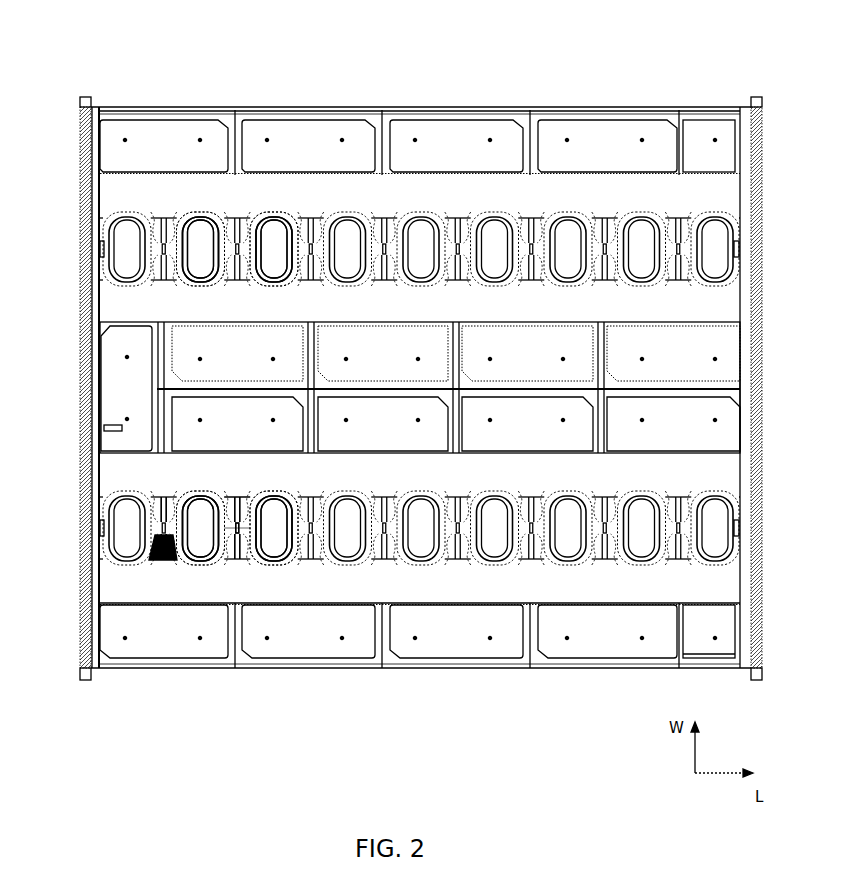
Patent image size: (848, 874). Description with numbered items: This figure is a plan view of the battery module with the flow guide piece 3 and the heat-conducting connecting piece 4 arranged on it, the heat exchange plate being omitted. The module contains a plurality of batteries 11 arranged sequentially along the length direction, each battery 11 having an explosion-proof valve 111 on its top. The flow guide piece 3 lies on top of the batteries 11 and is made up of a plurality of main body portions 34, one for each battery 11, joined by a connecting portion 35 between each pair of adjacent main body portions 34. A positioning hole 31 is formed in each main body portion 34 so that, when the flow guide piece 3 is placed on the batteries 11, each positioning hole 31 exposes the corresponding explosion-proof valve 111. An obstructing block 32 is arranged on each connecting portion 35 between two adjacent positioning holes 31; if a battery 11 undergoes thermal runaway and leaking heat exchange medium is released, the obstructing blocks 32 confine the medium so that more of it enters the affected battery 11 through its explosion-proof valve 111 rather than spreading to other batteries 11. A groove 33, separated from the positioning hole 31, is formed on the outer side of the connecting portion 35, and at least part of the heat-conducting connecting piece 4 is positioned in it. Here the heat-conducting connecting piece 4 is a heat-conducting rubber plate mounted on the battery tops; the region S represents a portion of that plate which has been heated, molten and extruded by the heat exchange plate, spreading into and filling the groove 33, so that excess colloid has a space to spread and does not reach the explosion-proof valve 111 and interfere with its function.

The flow guide piece 3 is at (101, 212).
The heat-conducting connecting piece 4 is at (95, 176).
The battery 11 is at (182, 118).
The explosion-proof valve 111 is at (204, 218).
The positioning hole 31 is at (190, 565).
The obstructing block 32 is at (242, 535).
The groove 33 is at (236, 520).
The main body portion 34 is at (178, 565).
The connecting portion 35 is at (246, 540).
The spreading and extending portion S is at (158, 564).